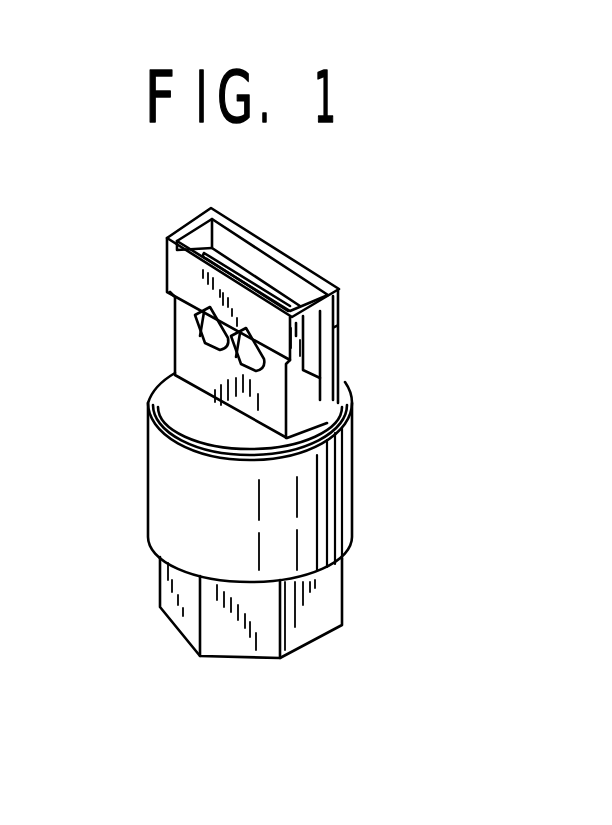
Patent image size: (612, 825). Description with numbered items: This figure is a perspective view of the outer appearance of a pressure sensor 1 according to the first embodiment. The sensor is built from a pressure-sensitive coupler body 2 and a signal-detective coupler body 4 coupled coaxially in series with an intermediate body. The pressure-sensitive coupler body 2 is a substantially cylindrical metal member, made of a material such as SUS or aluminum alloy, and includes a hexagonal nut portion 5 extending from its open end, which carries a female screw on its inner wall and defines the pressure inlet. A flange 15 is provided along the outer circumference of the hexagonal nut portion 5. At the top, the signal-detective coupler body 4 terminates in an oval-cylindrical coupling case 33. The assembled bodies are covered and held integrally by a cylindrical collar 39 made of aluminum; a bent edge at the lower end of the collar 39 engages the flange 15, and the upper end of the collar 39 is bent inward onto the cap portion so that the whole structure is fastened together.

The pressure sensor 1 is at (367, 388).
The pressure-sensitive coupler body 2 is at (353, 598).
The signal-detective coupler body 4 is at (351, 344).
The hexagonal nut portion 5 is at (161, 607).
The flange 15 is at (164, 384).
The oval-cylindrical coupling case 33 is at (302, 263).
The cylindrical collar 39 is at (333, 507).